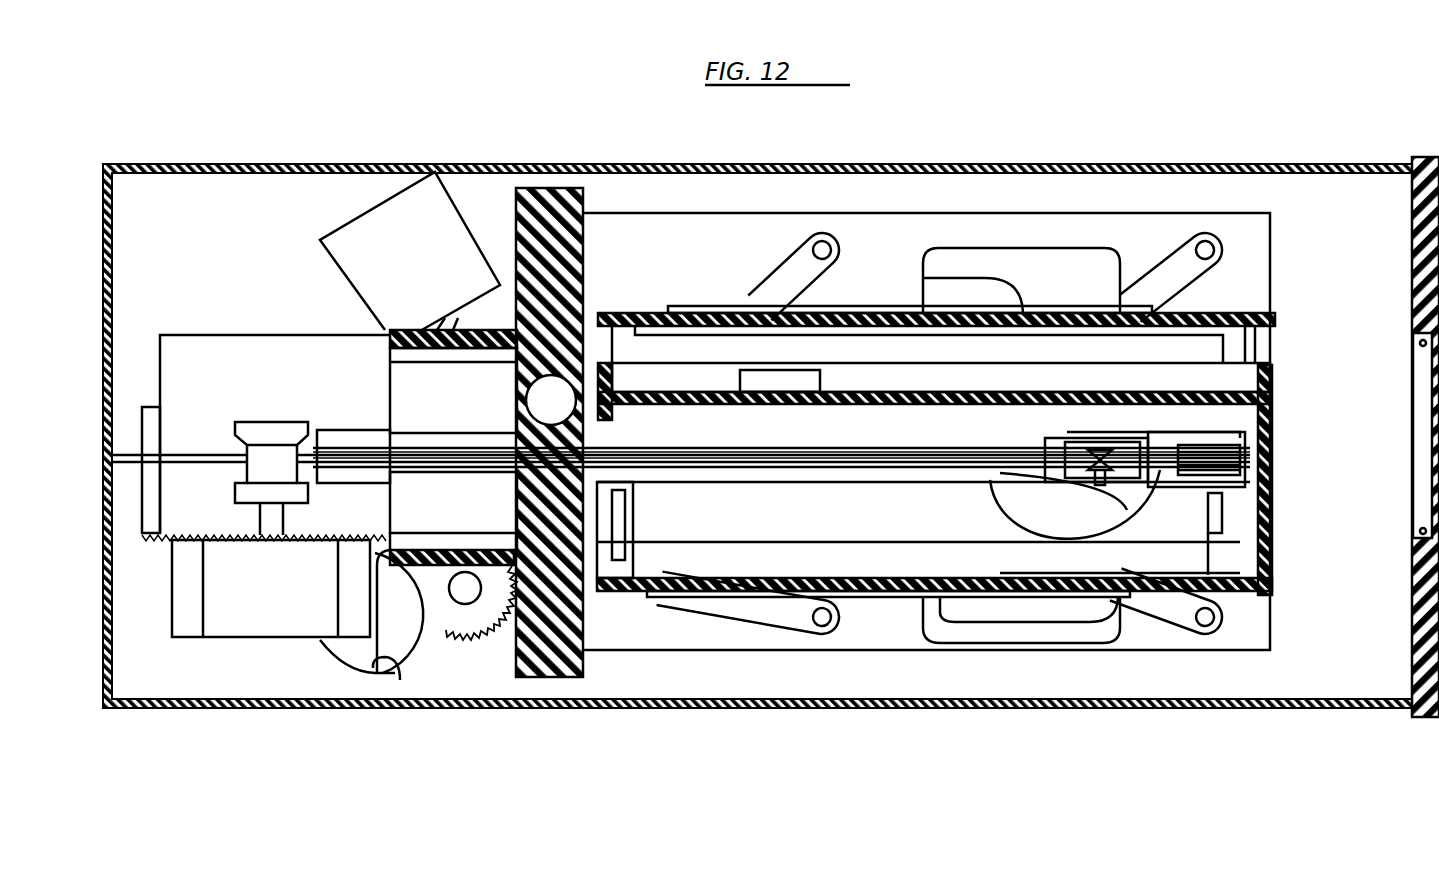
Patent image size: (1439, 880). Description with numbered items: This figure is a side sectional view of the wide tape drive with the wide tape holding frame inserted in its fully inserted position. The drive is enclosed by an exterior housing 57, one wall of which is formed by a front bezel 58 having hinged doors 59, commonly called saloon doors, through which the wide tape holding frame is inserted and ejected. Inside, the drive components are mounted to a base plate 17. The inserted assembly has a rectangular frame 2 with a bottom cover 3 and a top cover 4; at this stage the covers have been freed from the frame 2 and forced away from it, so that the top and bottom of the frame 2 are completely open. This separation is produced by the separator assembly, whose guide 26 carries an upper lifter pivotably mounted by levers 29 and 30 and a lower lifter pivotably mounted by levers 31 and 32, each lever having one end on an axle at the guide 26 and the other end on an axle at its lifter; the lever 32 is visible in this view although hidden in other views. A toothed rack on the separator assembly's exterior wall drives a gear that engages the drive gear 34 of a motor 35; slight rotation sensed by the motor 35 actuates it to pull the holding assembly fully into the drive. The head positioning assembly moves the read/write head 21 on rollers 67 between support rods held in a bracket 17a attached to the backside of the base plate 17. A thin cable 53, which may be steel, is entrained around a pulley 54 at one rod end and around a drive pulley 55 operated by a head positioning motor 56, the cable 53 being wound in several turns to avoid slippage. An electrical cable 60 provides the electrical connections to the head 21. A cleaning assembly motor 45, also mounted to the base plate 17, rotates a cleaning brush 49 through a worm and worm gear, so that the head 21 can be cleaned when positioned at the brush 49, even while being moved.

The rectangular frame 2 is at (1273, 372).
The bottom cover 3 is at (1268, 583).
The top cover 4 is at (1273, 322).
The base plate 17 is at (557, 188).
The bracket 17a is at (400, 330).
The read/write head 21 is at (1078, 442).
The guide 26 is at (1243, 248).
The lever 29 is at (783, 277).
The lever 30 is at (1170, 278).
The lever 31 is at (783, 608).
The lever 32 is at (1175, 607).
The drive gear 34 is at (482, 615).
The motor 35 is at (360, 647).
The cleaning assembly motor 45 is at (368, 248).
The cleaning brush 49 is at (543, 402).
The thin cable 53 is at (1130, 457).
The pulley 54 is at (1200, 470).
The drive pulley 55 is at (270, 428).
The head positioning motor 56 is at (234, 617).
The exterior housing 57 is at (978, 706).
The front bezel 58 is at (1425, 715).
The hinged doors 59 is at (1423, 393).
The electrical cable 60 is at (400, 680).
The rollers 67 is at (1088, 460).